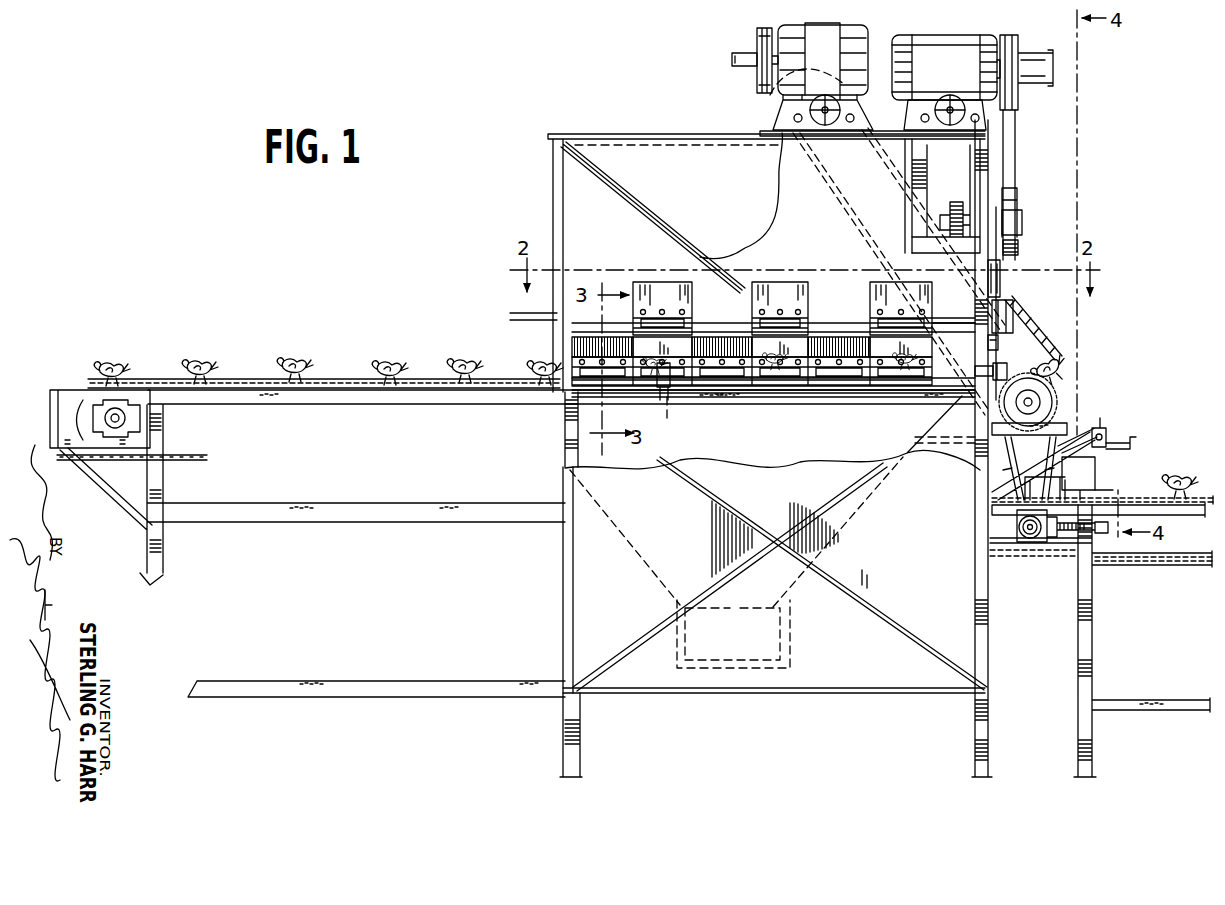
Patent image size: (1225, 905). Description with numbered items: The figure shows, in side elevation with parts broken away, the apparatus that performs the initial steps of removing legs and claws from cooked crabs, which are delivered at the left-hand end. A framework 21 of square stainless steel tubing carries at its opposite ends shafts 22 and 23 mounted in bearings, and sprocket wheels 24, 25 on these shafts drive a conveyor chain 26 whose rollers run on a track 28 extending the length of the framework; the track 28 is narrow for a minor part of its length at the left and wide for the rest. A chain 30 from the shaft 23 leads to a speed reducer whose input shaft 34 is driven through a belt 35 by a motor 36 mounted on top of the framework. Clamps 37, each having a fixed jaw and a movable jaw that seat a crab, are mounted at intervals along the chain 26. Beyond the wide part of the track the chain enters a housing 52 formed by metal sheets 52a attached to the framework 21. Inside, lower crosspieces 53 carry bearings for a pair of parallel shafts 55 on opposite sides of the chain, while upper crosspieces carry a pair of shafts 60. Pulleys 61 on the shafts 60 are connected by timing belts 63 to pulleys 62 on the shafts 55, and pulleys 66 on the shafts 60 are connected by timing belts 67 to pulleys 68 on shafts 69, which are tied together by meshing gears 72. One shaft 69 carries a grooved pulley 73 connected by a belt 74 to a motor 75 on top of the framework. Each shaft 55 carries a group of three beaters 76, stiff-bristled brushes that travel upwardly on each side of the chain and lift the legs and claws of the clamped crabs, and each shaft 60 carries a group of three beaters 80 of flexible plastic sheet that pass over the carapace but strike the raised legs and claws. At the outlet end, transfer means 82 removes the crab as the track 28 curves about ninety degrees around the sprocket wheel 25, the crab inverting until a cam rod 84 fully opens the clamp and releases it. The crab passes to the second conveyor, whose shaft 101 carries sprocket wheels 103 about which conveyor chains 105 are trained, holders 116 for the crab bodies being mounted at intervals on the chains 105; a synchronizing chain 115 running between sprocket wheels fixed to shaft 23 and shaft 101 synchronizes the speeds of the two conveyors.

The framework 21 is at (565, 575).
The shaft 22 is at (133, 420).
The shaft 23 is at (1040, 405).
The sprocket wheel 24 is at (83, 417).
The sprocket wheel 25 is at (1060, 378).
The conveyor chain 26 is at (328, 378).
The track 28 is at (455, 393).
The chain 30 is at (1005, 366).
The input shaft 34 is at (732, 60).
The belt 35 is at (758, 30).
The motor 36 is at (823, 28).
The clamps 37 is at (125, 366).
The housing 52 is at (618, 131).
The metal sheets 52a is at (700, 148).
The lower crosspieces 53 is at (674, 401).
The shafts 55 is at (877, 378).
The shafts 60 is at (838, 323).
The pulleys 61 is at (1013, 318).
The pulleys 62 is at (1010, 368).
The timing belts 63 is at (1014, 342).
The pulleys 66 is at (988, 340).
The timing belts 67 is at (1000, 289).
The pulleys 68 is at (993, 260).
The shafts 69 is at (1024, 226).
The meshing gears 72 is at (957, 203).
The grooved pulley 73 is at (1018, 196).
The belt 74 is at (1012, 130).
The motor 75 is at (953, 45).
The beaters 76 is at (725, 345).
The beaters 80 is at (657, 282).
The transfer means 82 is at (1143, 442).
The cam rod 84 is at (1083, 428).
The shaft 101 is at (1030, 538).
The sprocket wheels 103 is at (1012, 527).
The conveyor chains 105 is at (1155, 498).
The synchronizing chain 115 is at (987, 502).
The holders 116 is at (1172, 470).